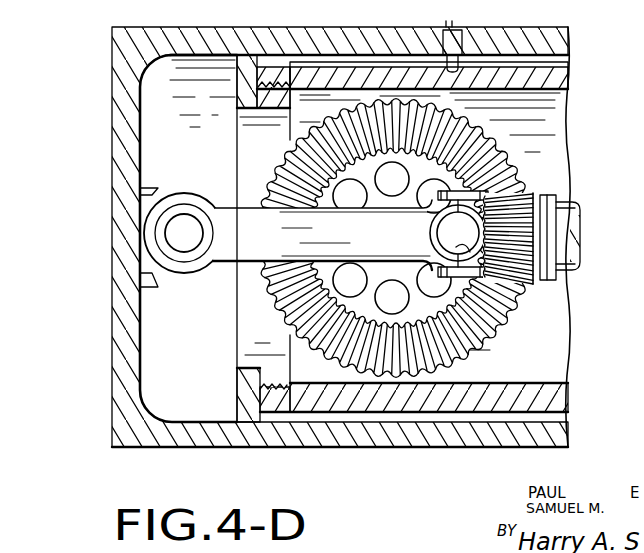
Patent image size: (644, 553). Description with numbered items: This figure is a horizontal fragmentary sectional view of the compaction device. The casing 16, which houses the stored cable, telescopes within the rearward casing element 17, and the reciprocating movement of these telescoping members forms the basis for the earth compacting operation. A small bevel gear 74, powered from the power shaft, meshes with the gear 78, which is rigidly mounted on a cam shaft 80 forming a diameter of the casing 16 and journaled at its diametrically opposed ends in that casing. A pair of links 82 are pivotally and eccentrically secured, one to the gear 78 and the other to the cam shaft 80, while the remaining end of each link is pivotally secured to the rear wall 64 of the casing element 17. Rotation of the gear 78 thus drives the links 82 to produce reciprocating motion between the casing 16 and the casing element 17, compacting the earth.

The rear wall 64 is at (112, 80).
The rearward casing element 17 is at (568, 34).
The casing 16 is at (567, 77).
The gear 78 is at (437, 238).
The cam shaft 80 is at (490, 328).
The small bevel gear 74 is at (526, 230).
The links 82 is at (228, 266).